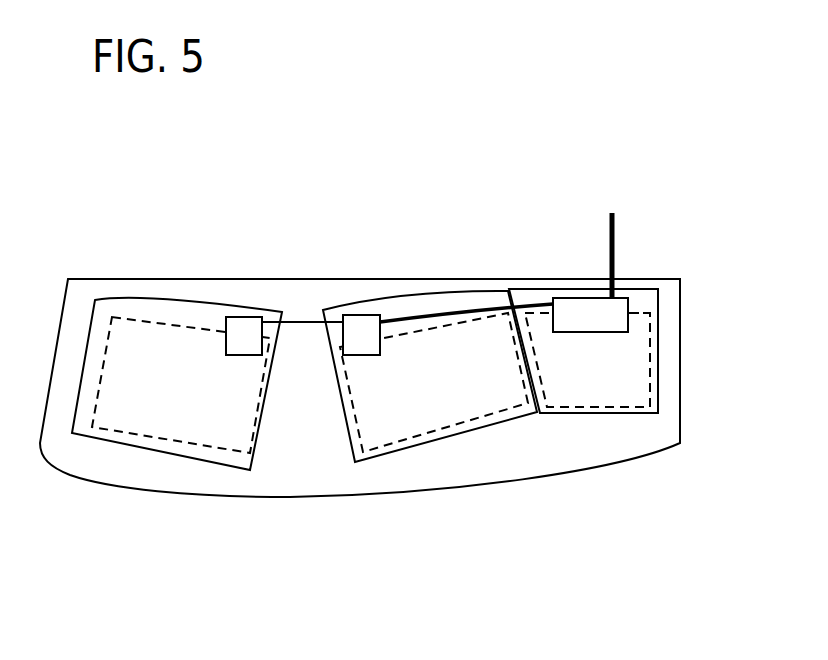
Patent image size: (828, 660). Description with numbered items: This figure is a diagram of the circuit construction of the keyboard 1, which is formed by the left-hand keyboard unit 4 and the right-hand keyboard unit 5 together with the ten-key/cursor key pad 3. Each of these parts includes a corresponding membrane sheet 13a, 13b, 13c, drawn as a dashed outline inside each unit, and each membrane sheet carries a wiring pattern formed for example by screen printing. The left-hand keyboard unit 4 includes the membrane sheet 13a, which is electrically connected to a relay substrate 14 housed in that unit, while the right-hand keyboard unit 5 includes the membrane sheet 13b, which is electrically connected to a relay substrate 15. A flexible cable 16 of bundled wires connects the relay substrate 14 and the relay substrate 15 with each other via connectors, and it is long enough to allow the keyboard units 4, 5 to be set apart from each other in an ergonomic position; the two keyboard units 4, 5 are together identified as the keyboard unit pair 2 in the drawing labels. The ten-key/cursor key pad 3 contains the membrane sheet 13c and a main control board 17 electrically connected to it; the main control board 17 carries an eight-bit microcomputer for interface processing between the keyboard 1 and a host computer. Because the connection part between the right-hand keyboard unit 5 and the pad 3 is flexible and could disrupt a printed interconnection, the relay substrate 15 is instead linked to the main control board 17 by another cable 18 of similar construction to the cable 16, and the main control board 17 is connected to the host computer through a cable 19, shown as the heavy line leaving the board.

The keyboard 1 is at (377, 166).
The glass antenna 2 is at (299, 390).
The ten-key/cursor key pad 3 is at (615, 408).
The left-hand keyboard unit 4 is at (172, 390).
The right-hand keyboard unit 5 is at (418, 415).
The membrane sheet 13a is at (137, 323).
The membrane sheet 13b is at (475, 403).
The membrane sheet 13c is at (640, 365).
The relay substrate 14 is at (242, 330).
The relay substrate 15 is at (365, 325).
The cable 16 is at (300, 323).
The main control board 17 is at (600, 305).
The cable 18 is at (435, 312).
The cable 19 is at (615, 238).